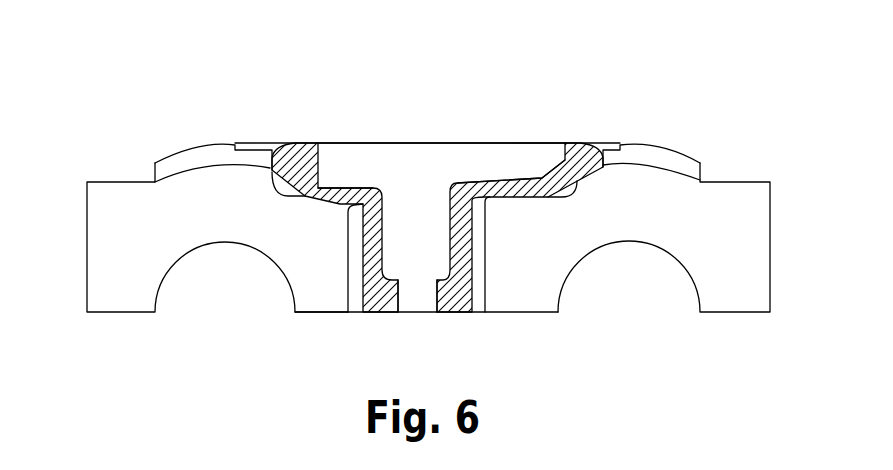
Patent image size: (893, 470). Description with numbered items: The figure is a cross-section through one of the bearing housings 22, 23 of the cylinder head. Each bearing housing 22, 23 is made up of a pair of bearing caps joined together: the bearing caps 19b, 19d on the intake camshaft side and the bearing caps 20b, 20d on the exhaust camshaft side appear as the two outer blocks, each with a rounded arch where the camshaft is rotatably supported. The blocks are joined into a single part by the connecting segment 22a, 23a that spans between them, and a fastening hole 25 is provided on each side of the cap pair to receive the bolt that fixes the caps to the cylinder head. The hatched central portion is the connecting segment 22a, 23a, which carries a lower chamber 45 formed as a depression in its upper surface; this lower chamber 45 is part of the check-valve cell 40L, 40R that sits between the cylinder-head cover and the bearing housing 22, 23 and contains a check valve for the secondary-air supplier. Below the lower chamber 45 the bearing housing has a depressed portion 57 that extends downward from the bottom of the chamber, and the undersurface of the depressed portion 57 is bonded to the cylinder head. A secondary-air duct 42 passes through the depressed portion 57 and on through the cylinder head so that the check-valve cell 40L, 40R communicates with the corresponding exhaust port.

The bearing housing 22 is at (427, 168).
The bearing housing 23 is at (293, 105).
The lower chamber 45 is at (441, 136).
The check-valve cell 40L is at (441, 136).
The check-valve cell 40R is at (415, 170).
The fastening hole 25 is at (116, 182).
The bearing cap 20b is at (216, 267).
The bearing cap 20d is at (124, 262).
The bearing cap 19b is at (676, 266).
The bearing cap 19d is at (732, 262).
The connecting segment 22a is at (416, 287).
The connecting segment 23a is at (318, 313).
The secondary-air duct 42 is at (415, 305).
The depressed portion 57 is at (470, 240).